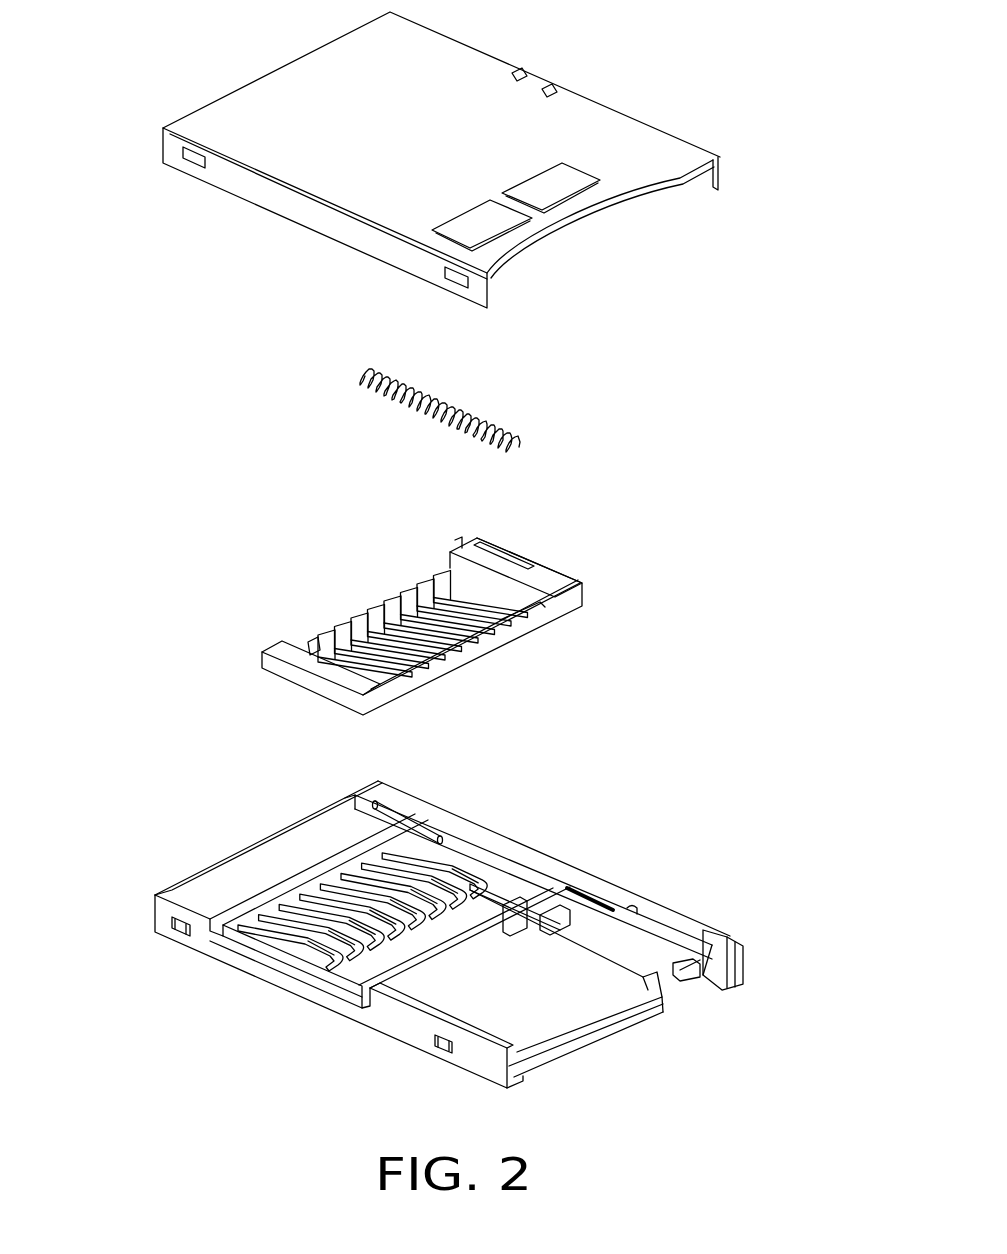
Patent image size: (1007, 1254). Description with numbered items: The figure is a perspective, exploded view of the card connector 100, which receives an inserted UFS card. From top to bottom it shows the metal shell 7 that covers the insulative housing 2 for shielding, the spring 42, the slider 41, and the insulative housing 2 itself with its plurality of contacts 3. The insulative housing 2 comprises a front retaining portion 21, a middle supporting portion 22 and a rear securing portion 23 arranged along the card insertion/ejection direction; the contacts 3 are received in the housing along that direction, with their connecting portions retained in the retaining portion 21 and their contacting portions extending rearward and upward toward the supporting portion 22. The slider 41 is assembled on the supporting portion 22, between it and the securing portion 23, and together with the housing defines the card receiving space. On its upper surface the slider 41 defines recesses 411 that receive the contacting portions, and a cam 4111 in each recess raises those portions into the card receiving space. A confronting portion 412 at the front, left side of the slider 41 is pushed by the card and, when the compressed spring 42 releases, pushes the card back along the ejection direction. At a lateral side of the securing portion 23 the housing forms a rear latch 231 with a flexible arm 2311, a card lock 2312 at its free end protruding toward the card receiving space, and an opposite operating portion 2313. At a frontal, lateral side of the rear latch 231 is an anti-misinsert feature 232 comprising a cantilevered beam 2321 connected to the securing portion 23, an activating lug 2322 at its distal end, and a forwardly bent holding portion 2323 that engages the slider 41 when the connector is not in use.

The card connector 100 is at (162, 45).
The metal shell 7 is at (575, 51).
The spring 42 is at (492, 376).
The slider 41 is at (556, 546).
The recesses 411 is at (473, 585).
The confronting portion 412 is at (313, 647).
The cam 4111 is at (523, 617).
The insulative housing 2 is at (313, 806).
The front retaining portion 21 is at (274, 860).
The middle supporting portion 22 is at (333, 987).
The rear securing portion 23 is at (540, 1026).
The contacts 3 is at (313, 962).
The rear latch 231 is at (862, 925).
The flexible arm 2311 is at (637, 930).
The card lock 2312 is at (687, 960).
The operating portion 2313 is at (738, 952).
The anti-misinsert feature 232 is at (711, 848).
The cantilevered beam 2321 is at (503, 952).
The activating lug 2322 is at (590, 948).
The holding portion 2323 is at (545, 938).